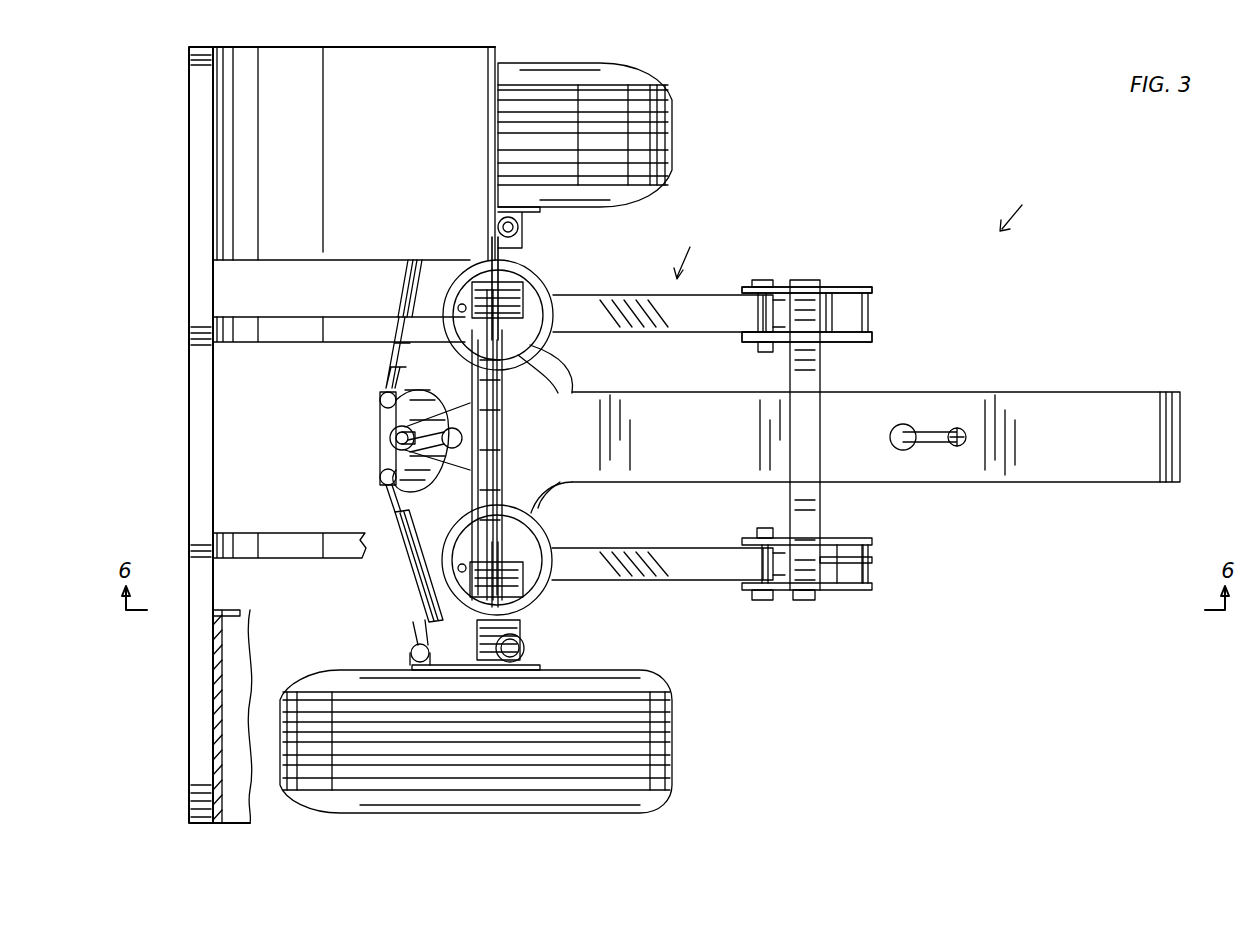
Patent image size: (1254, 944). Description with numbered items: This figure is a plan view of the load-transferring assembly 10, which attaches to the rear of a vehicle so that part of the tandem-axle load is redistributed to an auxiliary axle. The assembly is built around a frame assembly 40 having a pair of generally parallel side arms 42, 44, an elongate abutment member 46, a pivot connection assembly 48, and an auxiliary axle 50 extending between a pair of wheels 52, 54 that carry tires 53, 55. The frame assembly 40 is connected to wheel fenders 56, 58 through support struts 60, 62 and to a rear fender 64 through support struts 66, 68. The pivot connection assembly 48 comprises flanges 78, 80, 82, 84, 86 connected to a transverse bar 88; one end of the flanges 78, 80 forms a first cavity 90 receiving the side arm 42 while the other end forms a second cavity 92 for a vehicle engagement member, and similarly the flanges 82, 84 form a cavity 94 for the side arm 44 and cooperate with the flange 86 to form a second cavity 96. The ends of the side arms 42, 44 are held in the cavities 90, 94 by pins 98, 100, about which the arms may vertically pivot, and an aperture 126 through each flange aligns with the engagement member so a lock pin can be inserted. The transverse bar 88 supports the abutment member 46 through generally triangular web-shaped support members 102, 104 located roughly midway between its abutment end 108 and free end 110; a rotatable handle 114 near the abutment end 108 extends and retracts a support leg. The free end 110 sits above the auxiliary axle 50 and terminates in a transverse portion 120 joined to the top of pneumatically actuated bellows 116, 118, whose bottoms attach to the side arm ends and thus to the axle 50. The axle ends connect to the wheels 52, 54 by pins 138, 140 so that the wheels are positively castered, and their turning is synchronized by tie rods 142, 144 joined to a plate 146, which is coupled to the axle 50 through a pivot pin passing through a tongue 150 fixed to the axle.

The load-transferring assembly 10 is at (1024, 206).
The frame assembly 40 is at (692, 251).
The side arm 42 is at (680, 334).
The side arm 44 is at (680, 586).
The elongate abutment member 46 is at (1005, 485).
The pivot connection assembly 48 is at (918, 332).
The auxiliary axle 50 is at (522, 629).
The wheel 52 is at (540, 210).
The tire 53 is at (668, 132).
The wheel 54 is at (453, 665).
The tire 55 is at (670, 757).
The wheel fender 56 is at (270, 80).
The wheel fender 58 is at (234, 608).
The support strut 60 is at (494, 256).
The support strut 62 is at (526, 580).
The rear fender 64 is at (190, 429).
The support strut 66 is at (259, 343).
The support strut 68 is at (281, 535).
The flange 78 is at (833, 286).
The flange 80 is at (868, 339).
The flange 82 is at (870, 592).
The flange 84 is at (875, 540).
The flange 86 is at (875, 560).
The transverse bar 88 is at (801, 601).
The first cavity 90 is at (792, 282).
The second cavity 92 is at (870, 306).
The cavity 94 is at (788, 601).
The second cavity 96 is at (880, 584).
The pin 98 is at (762, 280).
The pin 100 is at (746, 600).
The support member 102 is at (796, 360).
The support member 104 is at (790, 499).
The abutment end 108 is at (1145, 485).
The free end 110 is at (578, 406).
The rotatable handle 114 is at (940, 430).
The bellows 116 is at (541, 292).
The bellows 118 is at (543, 539).
The transverse portion 120 is at (525, 462).
The aperture 126 is at (870, 286).
The pin 138 is at (498, 226).
The pin 140 is at (526, 650).
The tie rod 142 is at (406, 280).
The tie rod 144 is at (392, 601).
The plate 146 is at (388, 440).
The tongue 150 is at (398, 385).